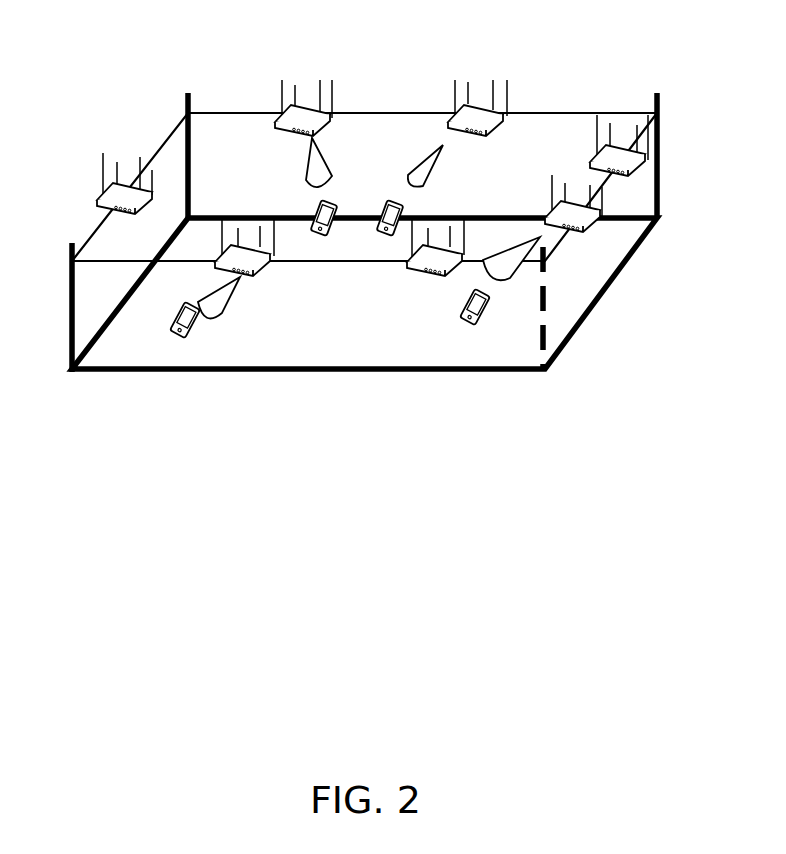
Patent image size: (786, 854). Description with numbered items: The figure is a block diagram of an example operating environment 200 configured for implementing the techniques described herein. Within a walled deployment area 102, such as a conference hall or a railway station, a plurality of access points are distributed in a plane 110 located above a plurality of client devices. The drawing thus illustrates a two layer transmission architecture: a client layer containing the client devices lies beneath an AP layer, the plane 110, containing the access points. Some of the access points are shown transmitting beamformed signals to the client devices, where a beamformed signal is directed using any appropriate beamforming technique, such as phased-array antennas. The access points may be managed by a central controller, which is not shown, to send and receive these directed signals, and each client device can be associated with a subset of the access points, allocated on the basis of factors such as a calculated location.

The deployment area 102 is at (88, 240).
The plane 110 is at (228, 110).
The example operating environment 200 is at (366, 392).